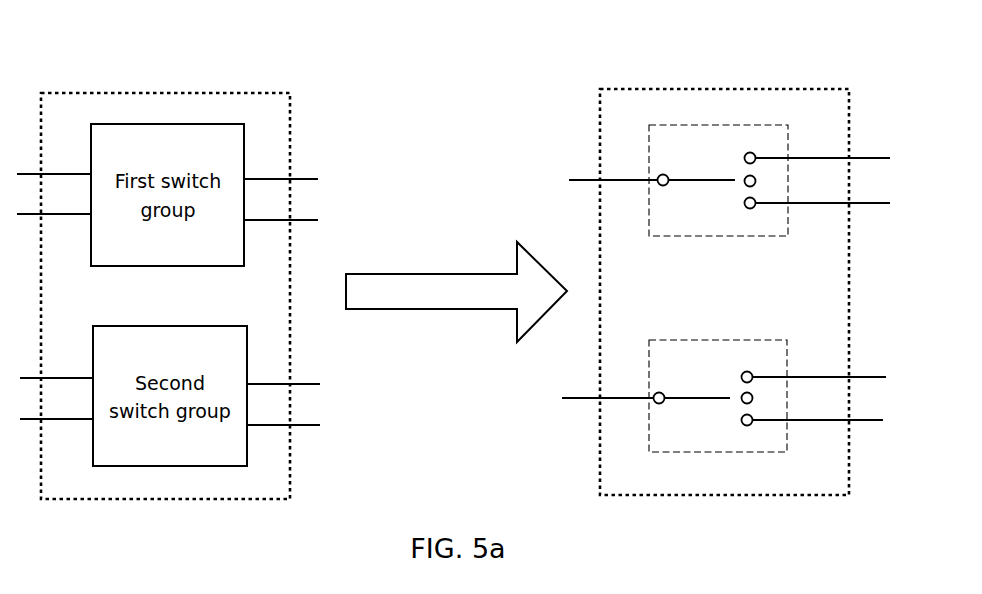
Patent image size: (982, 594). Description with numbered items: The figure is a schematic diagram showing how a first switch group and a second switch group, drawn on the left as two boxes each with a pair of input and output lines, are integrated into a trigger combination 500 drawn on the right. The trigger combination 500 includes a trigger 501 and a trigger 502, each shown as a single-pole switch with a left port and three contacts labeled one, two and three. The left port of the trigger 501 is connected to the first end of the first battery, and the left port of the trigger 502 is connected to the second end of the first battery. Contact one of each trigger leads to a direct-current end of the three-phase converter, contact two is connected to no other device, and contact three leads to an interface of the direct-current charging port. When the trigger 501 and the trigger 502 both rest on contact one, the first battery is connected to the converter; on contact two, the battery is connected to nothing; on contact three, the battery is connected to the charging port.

The trigger combination 500 is at (653, 103).
The trigger 501 is at (787, 138).
The trigger 502 is at (787, 367).